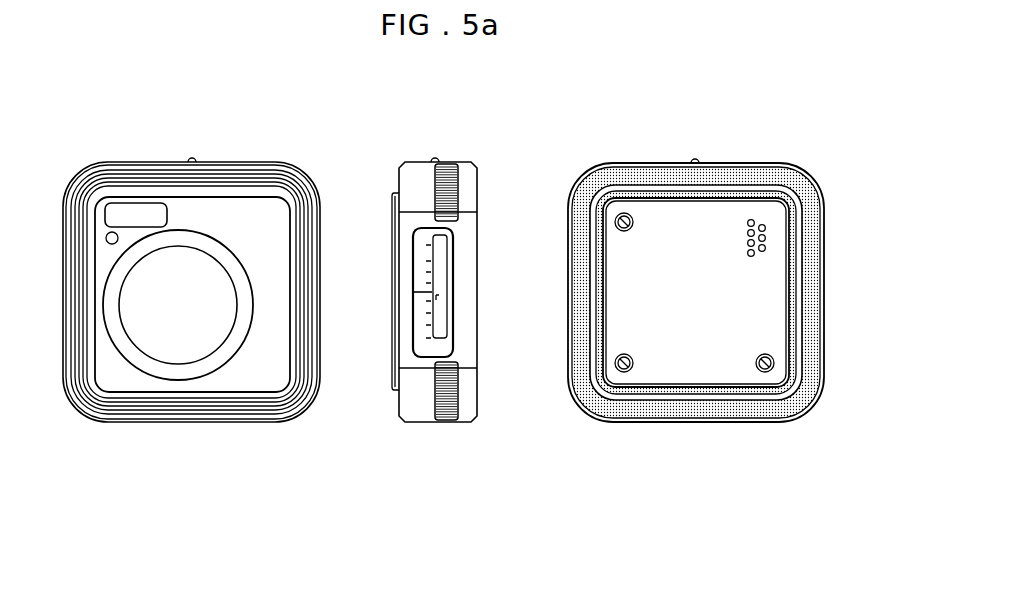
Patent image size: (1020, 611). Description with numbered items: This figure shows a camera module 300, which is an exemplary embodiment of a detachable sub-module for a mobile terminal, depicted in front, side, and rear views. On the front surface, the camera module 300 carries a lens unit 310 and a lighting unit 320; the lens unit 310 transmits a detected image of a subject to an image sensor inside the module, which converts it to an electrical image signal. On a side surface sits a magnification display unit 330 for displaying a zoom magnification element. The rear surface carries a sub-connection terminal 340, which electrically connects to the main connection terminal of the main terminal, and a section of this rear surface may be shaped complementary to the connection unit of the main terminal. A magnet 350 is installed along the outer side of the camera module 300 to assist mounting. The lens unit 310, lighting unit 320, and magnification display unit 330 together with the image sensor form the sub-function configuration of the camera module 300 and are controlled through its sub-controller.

The camera module 300 is at (723, 266).
The lens unit 310 is at (180, 312).
The lighting unit 320 is at (141, 212).
The magnification display unit 330 is at (441, 281).
The sub-connection terminal 340 is at (765, 237).
The magnet 350 is at (697, 405).